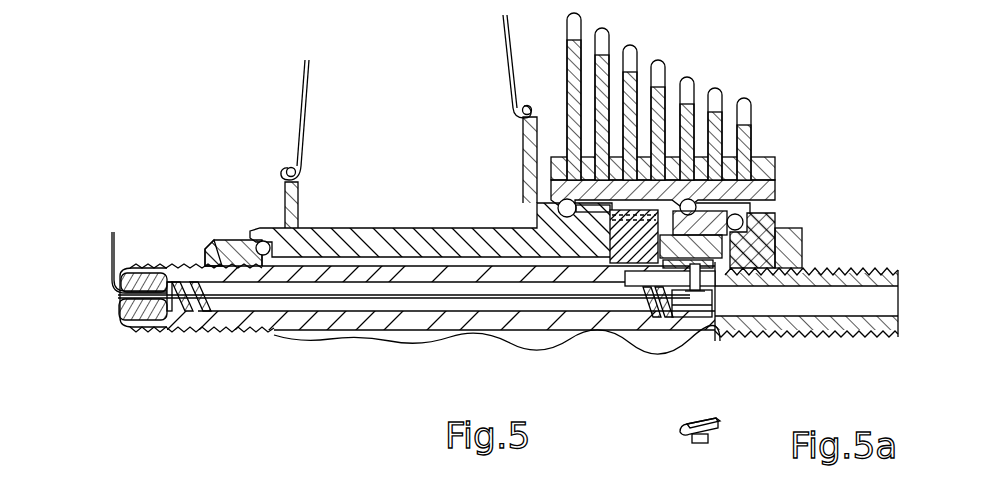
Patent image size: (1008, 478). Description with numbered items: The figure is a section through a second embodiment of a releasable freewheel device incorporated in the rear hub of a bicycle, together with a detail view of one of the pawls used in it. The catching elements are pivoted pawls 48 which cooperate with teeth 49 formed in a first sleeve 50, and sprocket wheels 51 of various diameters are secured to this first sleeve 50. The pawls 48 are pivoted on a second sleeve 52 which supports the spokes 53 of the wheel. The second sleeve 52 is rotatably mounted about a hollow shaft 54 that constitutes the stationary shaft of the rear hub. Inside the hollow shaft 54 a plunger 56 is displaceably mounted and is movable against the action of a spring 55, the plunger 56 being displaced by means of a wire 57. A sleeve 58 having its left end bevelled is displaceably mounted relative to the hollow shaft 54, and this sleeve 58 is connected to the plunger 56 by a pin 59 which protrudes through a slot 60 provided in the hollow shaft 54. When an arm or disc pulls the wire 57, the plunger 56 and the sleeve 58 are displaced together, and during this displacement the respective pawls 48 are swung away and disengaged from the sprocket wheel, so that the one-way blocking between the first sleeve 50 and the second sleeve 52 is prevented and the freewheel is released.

In FIG. 5, the pivoted pawls 48 is at (586, 299).
In FIG. 5a, the pivoted pawls 48 is at (721, 428).
In FIG. 5, the teeth 49 is at (750, 160).
In FIG. 5, the first sleeve 50 is at (776, 197).
In FIG. 5, the sprocket wheels 51 is at (694, 90).
In FIG. 5, the second sleeve 52 is at (536, 212).
In FIG. 5, the spokes 53 is at (507, 63).
In FIG. 5, the hollow shaft 54 is at (157, 265).
In FIG. 5, the spring 55 is at (193, 305).
In FIG. 5, the plunger 56 is at (707, 307).
In FIG. 5, the wire 57 is at (270, 299).
In FIG. 5, the sleeve 58 is at (683, 338).
In FIG. 5, the pin 59 is at (715, 290).
In FIG. 5, the slot 60 is at (640, 278).